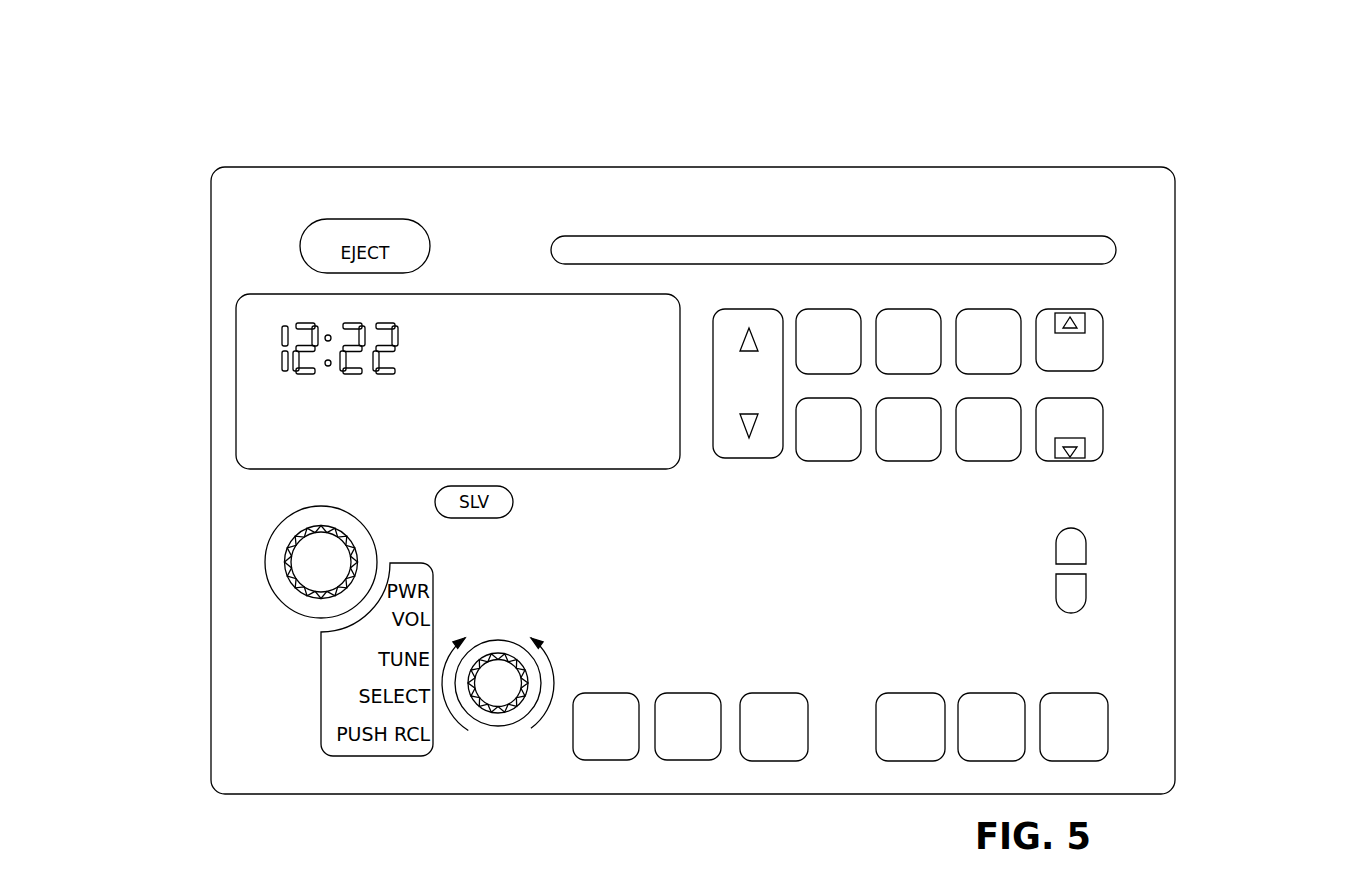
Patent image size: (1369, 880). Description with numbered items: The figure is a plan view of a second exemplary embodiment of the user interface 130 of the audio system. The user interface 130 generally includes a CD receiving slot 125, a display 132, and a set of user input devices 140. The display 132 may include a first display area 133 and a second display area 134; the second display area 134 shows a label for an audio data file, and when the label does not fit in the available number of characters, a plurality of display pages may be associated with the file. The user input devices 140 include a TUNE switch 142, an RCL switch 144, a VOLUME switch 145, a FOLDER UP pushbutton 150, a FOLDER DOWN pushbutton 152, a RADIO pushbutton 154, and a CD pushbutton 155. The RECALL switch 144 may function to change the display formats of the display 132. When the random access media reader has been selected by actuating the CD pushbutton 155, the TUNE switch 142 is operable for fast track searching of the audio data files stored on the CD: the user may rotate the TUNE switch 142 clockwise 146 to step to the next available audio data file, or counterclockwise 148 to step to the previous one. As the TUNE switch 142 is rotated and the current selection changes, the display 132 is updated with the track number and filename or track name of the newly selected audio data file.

The CD receiving slot 125 is at (1063, 250).
The user interface 130 is at (149, 644).
The display 132 is at (233, 402).
The first display area 133 is at (265, 347).
The second display area 134 is at (475, 415).
The user input devices 140 is at (967, 529).
The TUNE switch 142 is at (519, 657).
The RCL switch 144 is at (502, 653).
The VOLUME switch 145 is at (263, 560).
The clockwise rotation 146 is at (455, 724).
The counterclockwise rotation 148 is at (522, 728).
The FOLDER UP pushbutton 150 is at (1101, 340).
The FOLDER DOWN pushbutton 152 is at (1101, 430).
The RADIO pushbutton 154 is at (833, 290).
The CD pushbutton 155 is at (827, 460).